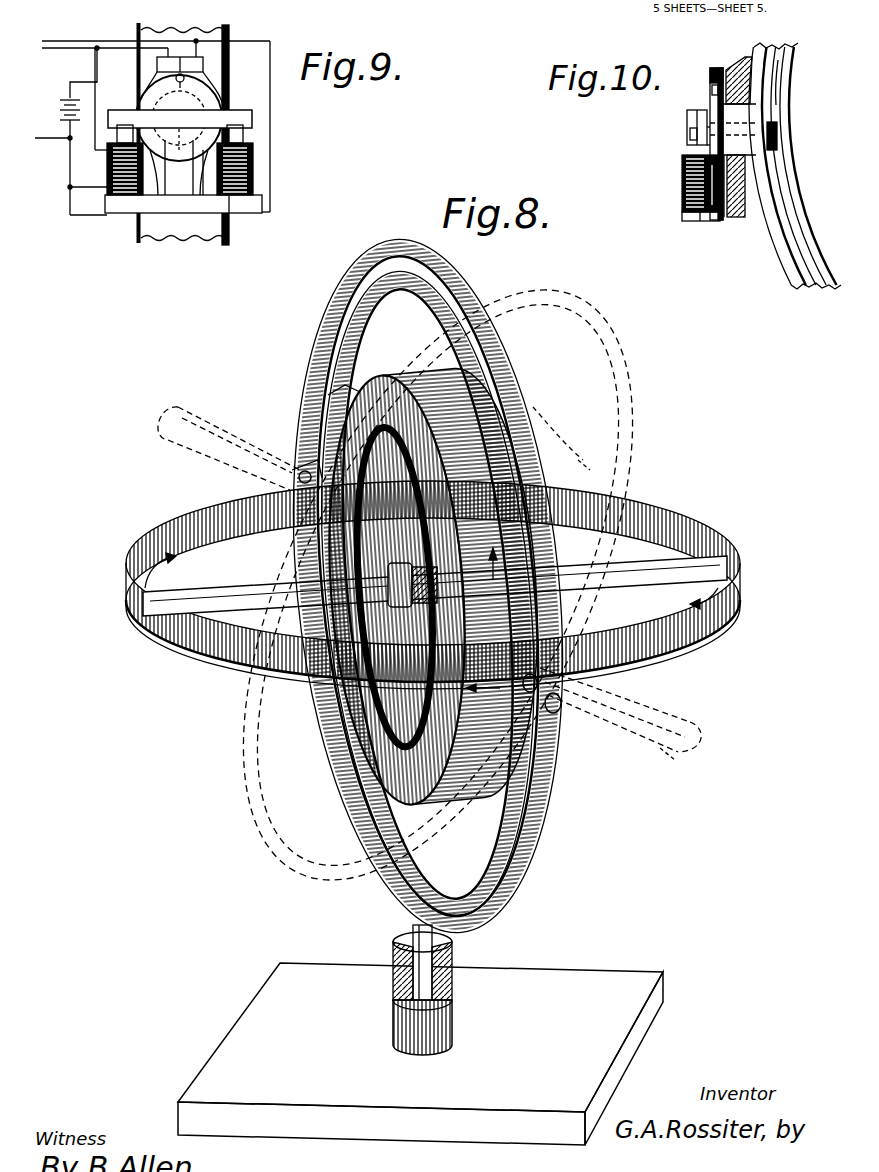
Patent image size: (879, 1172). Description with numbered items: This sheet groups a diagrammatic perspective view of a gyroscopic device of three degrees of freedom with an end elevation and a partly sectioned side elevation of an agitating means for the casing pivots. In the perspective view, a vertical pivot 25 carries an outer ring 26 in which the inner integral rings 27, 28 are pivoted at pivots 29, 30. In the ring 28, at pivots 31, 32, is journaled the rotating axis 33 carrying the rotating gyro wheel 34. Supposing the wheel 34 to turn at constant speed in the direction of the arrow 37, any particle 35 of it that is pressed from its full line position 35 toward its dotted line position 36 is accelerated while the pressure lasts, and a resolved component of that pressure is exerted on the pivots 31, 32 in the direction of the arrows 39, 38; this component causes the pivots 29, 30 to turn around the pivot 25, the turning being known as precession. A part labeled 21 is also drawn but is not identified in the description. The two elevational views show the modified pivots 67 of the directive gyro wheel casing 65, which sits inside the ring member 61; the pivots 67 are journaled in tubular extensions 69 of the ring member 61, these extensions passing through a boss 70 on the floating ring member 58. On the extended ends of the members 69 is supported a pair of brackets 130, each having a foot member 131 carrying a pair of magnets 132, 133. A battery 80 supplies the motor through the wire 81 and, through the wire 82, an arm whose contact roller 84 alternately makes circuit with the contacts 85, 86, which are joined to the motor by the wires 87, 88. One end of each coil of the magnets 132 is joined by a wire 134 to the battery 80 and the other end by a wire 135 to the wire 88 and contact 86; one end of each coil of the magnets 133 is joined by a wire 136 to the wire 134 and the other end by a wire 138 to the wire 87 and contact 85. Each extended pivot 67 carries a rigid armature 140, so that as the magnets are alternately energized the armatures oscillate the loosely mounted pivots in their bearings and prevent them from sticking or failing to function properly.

In FIG. 8, the ghost position of ring 21 is at (662, 752).
In FIG. 8, the vertical pivot 25 is at (455, 955).
In FIG. 8, the outer ring 26 is at (350, 270).
In FIG. 8, the inner ring 27 is at (333, 312).
In FIG. 8, the inner ring 28 is at (222, 425).
In FIG. 8, the pivot 29 is at (562, 660).
In FIG. 8, the pivot 30 is at (297, 514).
In FIG. 8, the pivot 31 is at (165, 430).
In FIG. 8, the pivot 32 is at (685, 712).
In FIG. 8, the rotating axis 33 is at (255, 468).
In FIG. 8, the rotating gyro wheel 34 is at (360, 388).
In FIG. 8, the particle 35 is at (405, 375).
In FIG. 8, the dotted line position 36 is at (540, 410).
In FIG. 8, the arrow 37 is at (503, 577).
In FIG. 8, the arrow 38 is at (730, 592).
In FIG. 8, the arrow 39 is at (172, 571).
In FIG. 9, the floating ring member 58 is at (165, 230).
In FIG. 10, the floating ring member 58 is at (770, 240).
In FIG. 10, the ring member 61 is at (790, 55).
In FIG. 10, the directive gyro wheel casing 65 is at (795, 85).
In FIG. 9, the pivot 67 is at (179, 134).
In FIG. 10, the pivot 67 is at (775, 150).
In FIG. 9, the tubular extension 69 is at (179, 168).
In FIG. 10, the tubular extension 69 is at (731, 196).
In FIG. 9, the boss 70 is at (215, 92).
In FIG. 10, the boss 70 is at (742, 70).
In FIG. 9, the battery 80 is at (62, 100).
In FIG. 9, the wire 81 is at (43, 138).
In FIG. 9, the wire 82 is at (96, 82).
In FIG. 9, the contact roller 84 is at (203, 70).
In FIG. 10, the contact roller 84 is at (712, 88).
In FIG. 9, the contact 85 is at (157, 63).
In FIG. 10, the contact 85 is at (714, 68).
In FIG. 9, the contact 86 is at (200, 58).
In FIG. 9, the wire 87 is at (67, 41).
In FIG. 9, the wire 88 is at (112, 48).
In FIG. 9, the bracket 130 is at (203, 196).
In FIG. 10, the bracket 130 is at (700, 183).
In FIG. 9, the foot member 131 is at (230, 204).
In FIG. 10, the foot member 131 is at (698, 214).
In FIG. 9, the magnet 132 is at (255, 168).
In FIG. 10, the magnet 132 is at (685, 162).
In FIG. 9, the magnet 133 is at (120, 198).
In FIG. 9, the wire 134 is at (67, 175).
In FIG. 10, the wire 134 is at (690, 213).
In FIG. 9, the wire 135 is at (270, 100).
In FIG. 10, the wire 135 is at (705, 152).
In FIG. 9, the wire 136 is at (85, 190).
In FIG. 9, the wire 138 is at (97, 112).
In FIG. 9, the armature 140 is at (252, 119).
In FIG. 10, the armature 140 is at (690, 128).